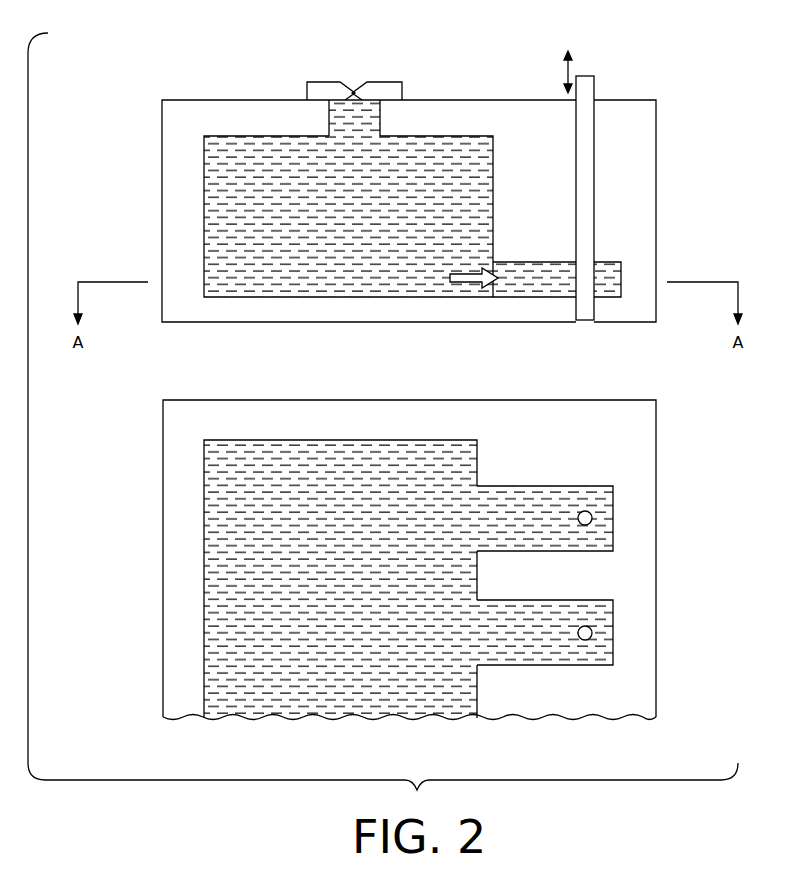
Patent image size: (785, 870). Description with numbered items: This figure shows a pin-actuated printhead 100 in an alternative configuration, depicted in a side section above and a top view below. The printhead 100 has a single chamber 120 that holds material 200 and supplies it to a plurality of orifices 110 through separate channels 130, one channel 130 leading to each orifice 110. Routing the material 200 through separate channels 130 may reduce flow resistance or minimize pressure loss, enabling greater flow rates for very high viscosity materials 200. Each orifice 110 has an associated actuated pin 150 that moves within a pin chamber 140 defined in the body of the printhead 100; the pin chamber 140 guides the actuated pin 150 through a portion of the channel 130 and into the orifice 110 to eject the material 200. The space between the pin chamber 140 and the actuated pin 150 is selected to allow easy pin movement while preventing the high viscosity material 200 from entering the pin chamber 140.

The printhead 100 is at (137, 88).
The orifice 110 is at (592, 523).
The chamber 120 is at (248, 240).
The channel 130 is at (543, 262).
The pin chamber 140 is at (602, 91).
The actuated pin 150 is at (588, 92).
The material 200 is at (358, 218).